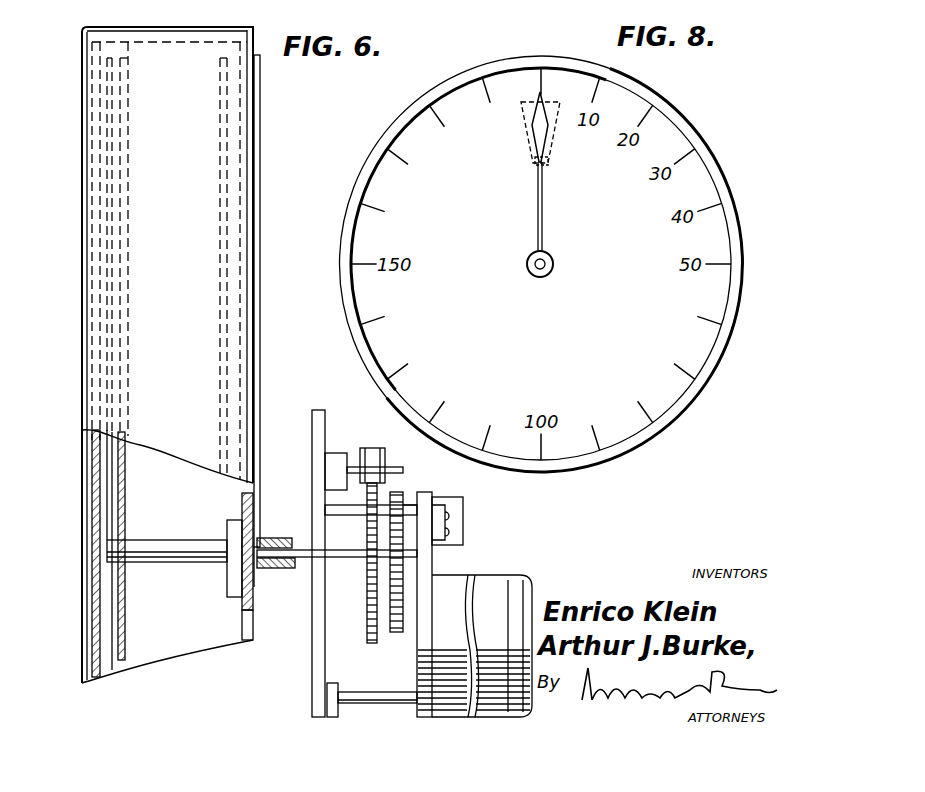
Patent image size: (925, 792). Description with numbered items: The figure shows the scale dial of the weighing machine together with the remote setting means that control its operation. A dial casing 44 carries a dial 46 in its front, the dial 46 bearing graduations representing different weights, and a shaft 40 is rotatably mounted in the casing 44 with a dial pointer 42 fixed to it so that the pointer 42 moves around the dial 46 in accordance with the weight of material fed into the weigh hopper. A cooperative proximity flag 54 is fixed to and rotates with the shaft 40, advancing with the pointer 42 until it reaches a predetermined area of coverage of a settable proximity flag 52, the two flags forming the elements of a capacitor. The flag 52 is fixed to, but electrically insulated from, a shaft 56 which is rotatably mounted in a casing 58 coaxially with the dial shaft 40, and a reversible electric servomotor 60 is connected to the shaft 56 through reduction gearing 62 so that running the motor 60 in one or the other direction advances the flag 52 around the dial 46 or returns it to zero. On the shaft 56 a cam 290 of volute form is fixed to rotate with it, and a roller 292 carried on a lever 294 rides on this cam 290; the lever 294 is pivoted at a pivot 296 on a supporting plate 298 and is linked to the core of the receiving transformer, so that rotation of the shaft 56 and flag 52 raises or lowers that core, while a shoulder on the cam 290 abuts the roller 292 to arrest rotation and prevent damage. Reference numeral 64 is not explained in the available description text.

In FIG. 6, the shaft 40 is at (168, 548).
In FIG. 6, the dial pointer 42 is at (113, 158).
In FIG. 8, the dial pointer 42 is at (537, 190).
In FIG. 6, the dial casing 44 is at (84, 142).
In FIG. 6, the dial 46 is at (123, 472).
In FIG. 6, the proximity flag 52 is at (260, 151).
In FIG. 8, the proximity flag 52 is at (523, 120).
In FIG. 6, the cooperative proximity flag 54 is at (223, 172).
In FIG. 8, the cooperative proximity flag 54 is at (550, 150).
In FIG. 6, the shaft 56 is at (302, 555).
In FIG. 6, the casing 58 is at (422, 569).
In FIG. 6, the reversible electric servomotor 60 is at (490, 590).
In FIG. 6, the reduction gearing 62 is at (390, 568).
In FIG. 6, the gear 64 is at (390, 600).
In FIG. 6, the cam 290 is at (367, 633).
In FIG. 6, the roller 292 is at (373, 448).
In FIG. 6, the lever 294 is at (367, 485).
In FIG. 6, the pivot 296 is at (398, 470).
In FIG. 6, the supporting plate 298 is at (320, 411).